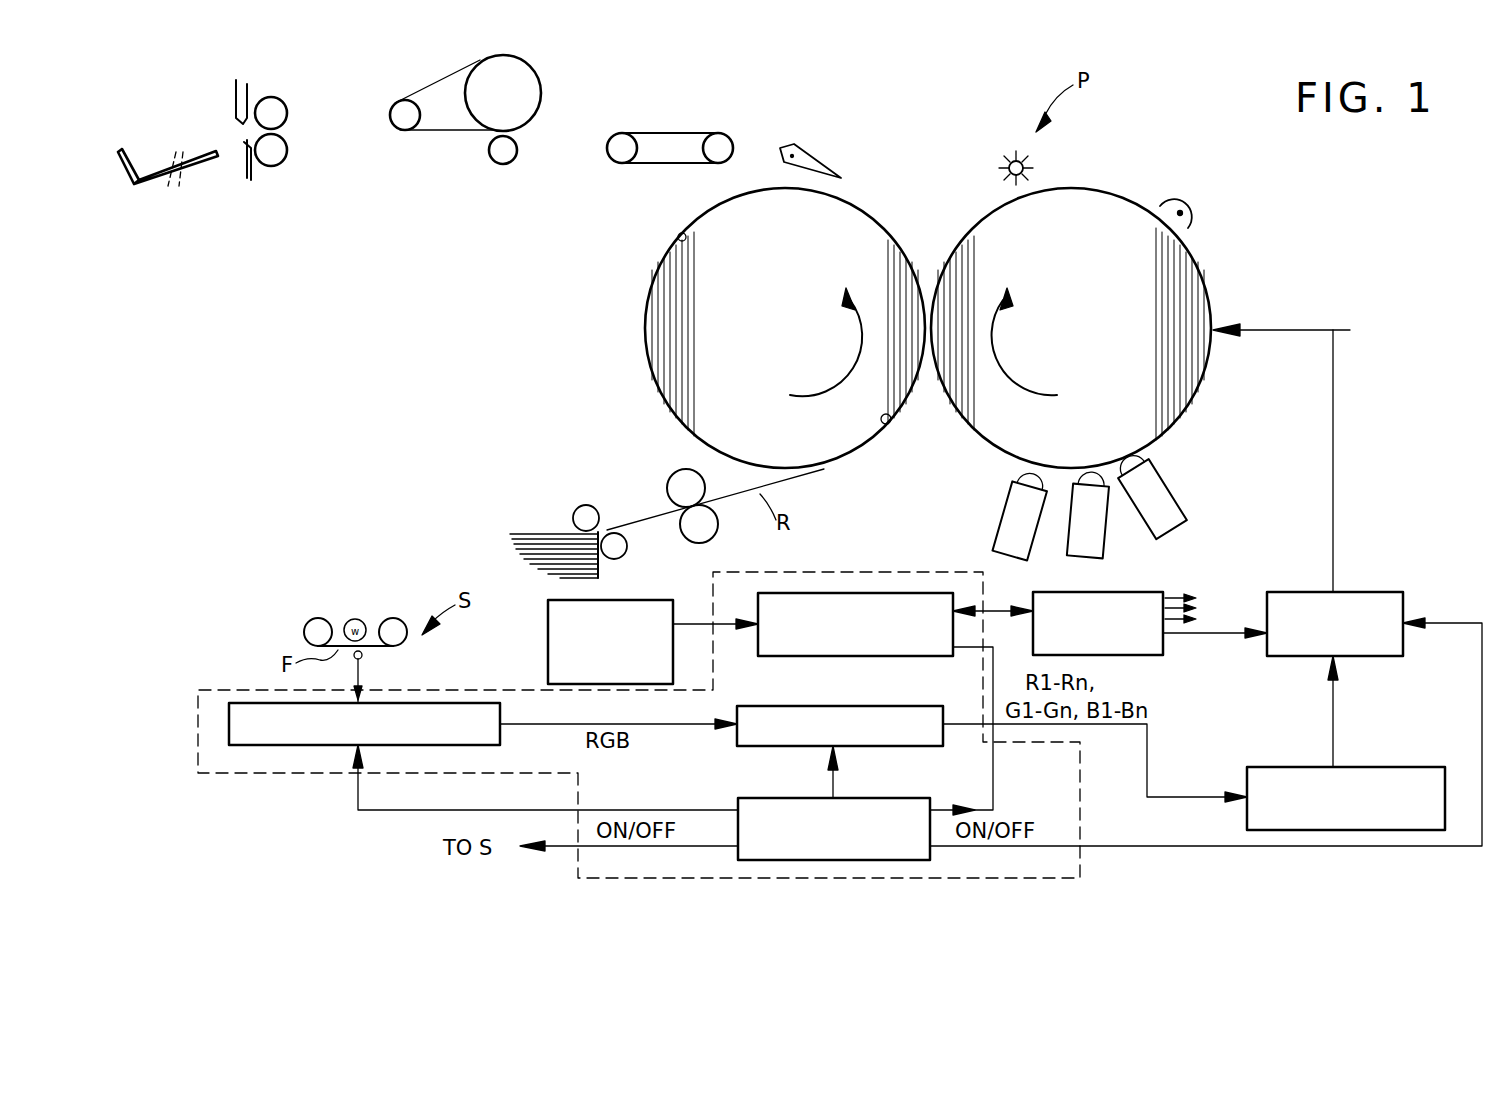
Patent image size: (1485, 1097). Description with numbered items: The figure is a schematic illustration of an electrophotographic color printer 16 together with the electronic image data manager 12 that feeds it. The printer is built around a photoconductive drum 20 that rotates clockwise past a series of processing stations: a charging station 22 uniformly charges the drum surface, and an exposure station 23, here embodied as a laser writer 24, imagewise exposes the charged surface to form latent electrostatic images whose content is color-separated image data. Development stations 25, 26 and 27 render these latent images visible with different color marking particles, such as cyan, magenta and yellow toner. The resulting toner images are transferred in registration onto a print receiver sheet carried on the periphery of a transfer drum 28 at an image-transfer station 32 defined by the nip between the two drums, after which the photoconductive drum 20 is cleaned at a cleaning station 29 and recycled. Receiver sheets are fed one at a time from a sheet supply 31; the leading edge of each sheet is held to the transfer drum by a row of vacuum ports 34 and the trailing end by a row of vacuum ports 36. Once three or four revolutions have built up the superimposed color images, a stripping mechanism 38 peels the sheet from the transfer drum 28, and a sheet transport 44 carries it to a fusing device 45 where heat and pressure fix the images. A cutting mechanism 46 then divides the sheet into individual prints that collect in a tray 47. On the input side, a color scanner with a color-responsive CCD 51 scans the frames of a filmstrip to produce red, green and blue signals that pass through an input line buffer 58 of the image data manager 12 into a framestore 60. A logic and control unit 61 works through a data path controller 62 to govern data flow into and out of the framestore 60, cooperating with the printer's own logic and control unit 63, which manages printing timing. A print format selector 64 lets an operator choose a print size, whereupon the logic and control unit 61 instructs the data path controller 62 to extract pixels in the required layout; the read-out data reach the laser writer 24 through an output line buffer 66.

The image data manager 12 is at (855, 586).
The electrophotographic printer 16 is at (1348, 402).
The photoconductive drum 20 is at (1100, 192).
The charging station 22 is at (1192, 204).
The exposure station 23 is at (1268, 328).
The laser writer 24 is at (1376, 591).
The development station 25 is at (1168, 503).
The development station 26 is at (1090, 520).
The development station 27 is at (1005, 522).
The transfer drum 28 is at (890, 222).
The cleaning station 29 is at (1010, 162).
The sheet supply 31 is at (538, 534).
The image-transfer station 32 is at (928, 400).
The vacuum ports 34 is at (887, 428).
The vacuum ports 36 is at (678, 236).
The stripping mechanism 38 is at (812, 162).
The sheet transport 44 is at (688, 132).
The fusing device 45 is at (546, 82).
The cutting mechanism 46 is at (289, 95).
The tray 47 is at (160, 140).
The color-responsive CCD 51 is at (363, 657).
The input line buffer 58 is at (288, 748).
The framestore 60 is at (765, 748).
The logic and control unit 61 is at (826, 592).
The data path controller 62 is at (875, 797).
The logic and control unit 63 is at (1152, 592).
The print format selector 64 is at (548, 652).
The output line buffer 66 is at (1400, 766).